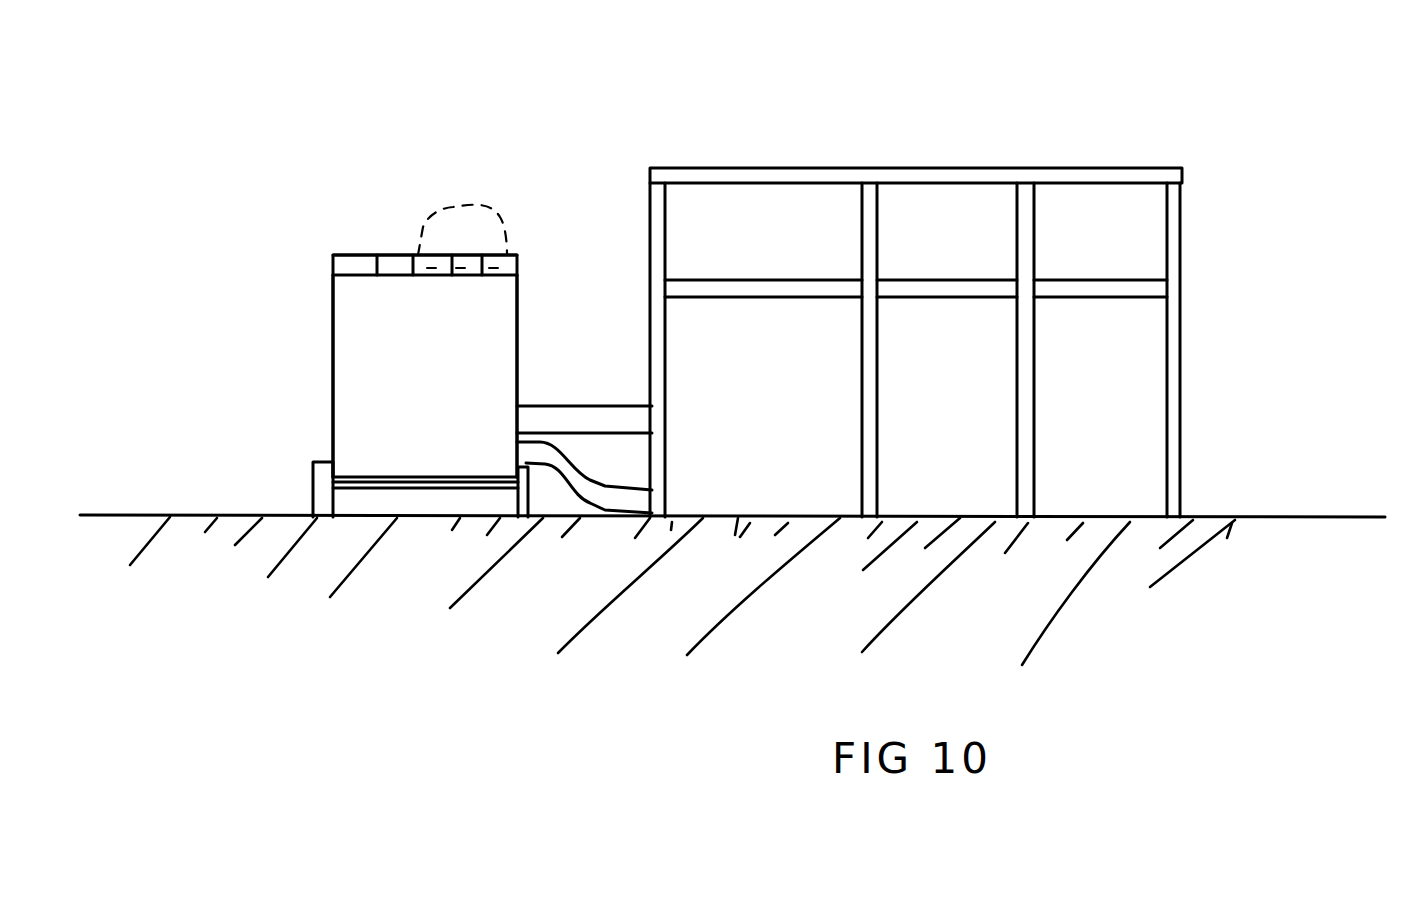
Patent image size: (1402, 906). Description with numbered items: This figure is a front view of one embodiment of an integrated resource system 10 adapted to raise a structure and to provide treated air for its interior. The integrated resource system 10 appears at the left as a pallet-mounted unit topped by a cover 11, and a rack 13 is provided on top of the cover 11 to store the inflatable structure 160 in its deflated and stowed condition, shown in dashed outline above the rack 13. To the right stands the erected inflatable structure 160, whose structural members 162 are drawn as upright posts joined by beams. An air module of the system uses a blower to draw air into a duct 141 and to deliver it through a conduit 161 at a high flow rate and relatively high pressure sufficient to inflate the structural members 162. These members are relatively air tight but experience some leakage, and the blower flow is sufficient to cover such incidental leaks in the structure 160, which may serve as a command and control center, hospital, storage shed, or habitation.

The integrated resource system 10 is at (333, 367).
The cover 11 is at (333, 310).
The rack 13 is at (343, 255).
The duct 141 is at (573, 406).
The inflatable structure 160 is at (492, 195).
The conduit 161 is at (615, 490).
The structural members 162 is at (793, 183).